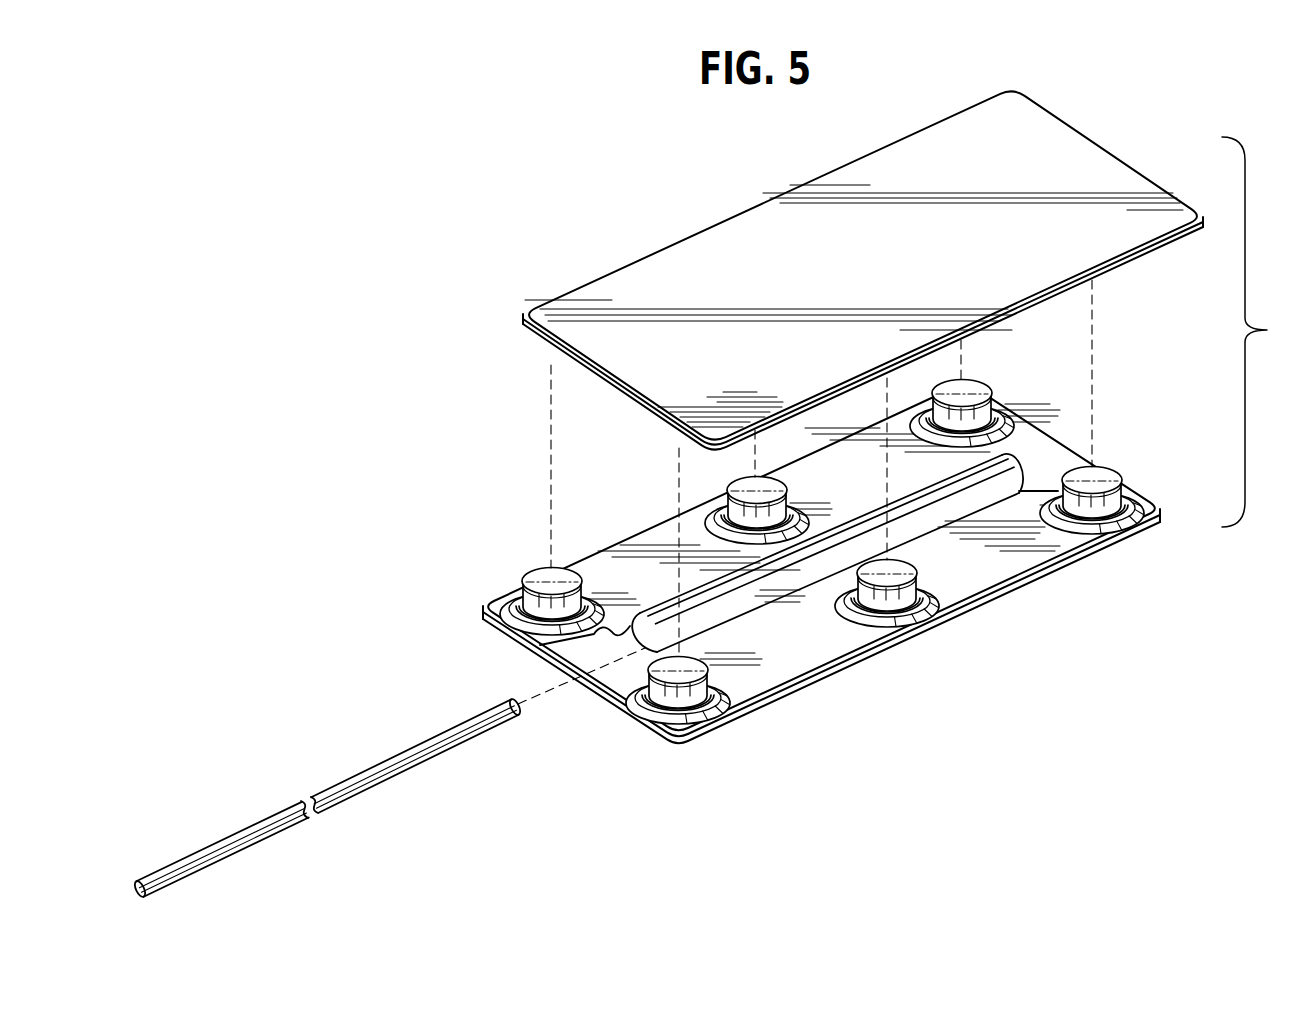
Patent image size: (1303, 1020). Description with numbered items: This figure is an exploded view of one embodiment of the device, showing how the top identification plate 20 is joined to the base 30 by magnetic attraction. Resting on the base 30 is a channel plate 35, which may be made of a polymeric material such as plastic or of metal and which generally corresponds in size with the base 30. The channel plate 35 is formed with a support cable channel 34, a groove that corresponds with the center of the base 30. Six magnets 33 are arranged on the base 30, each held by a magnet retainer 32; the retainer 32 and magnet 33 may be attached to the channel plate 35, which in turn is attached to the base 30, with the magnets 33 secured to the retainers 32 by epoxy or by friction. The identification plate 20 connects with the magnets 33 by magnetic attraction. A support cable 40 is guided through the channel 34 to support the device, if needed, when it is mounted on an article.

The identification plate 20 is at (655, 278).
The base 30 is at (600, 680).
The magnet retainer 32 is at (700, 707).
The magnet 33 is at (668, 697).
The support cable channel 34 is at (752, 585).
The channel plate 35 is at (818, 627).
The support cable 40 is at (413, 765).